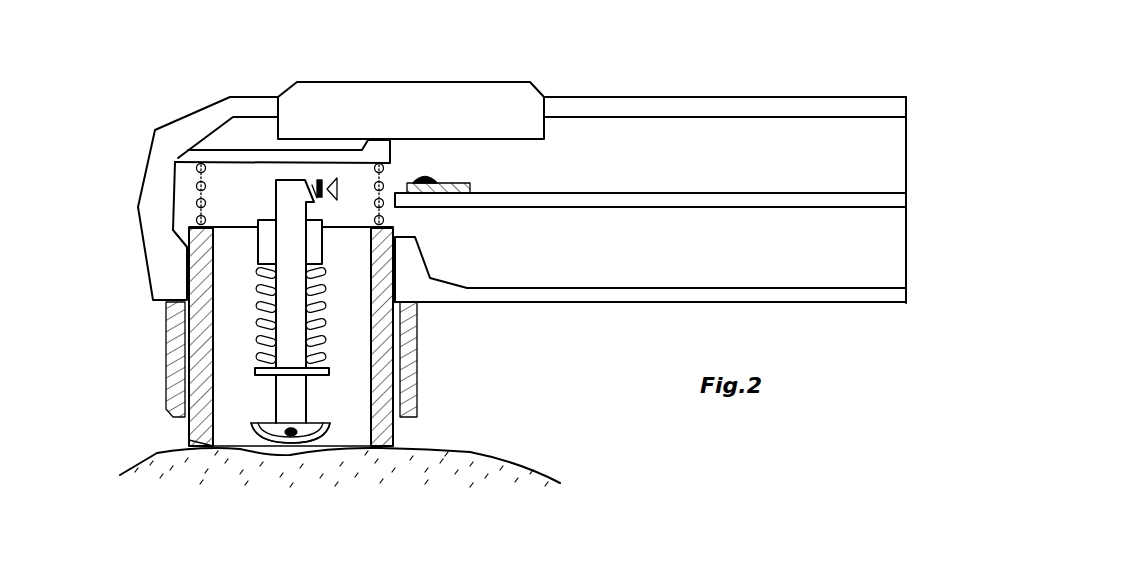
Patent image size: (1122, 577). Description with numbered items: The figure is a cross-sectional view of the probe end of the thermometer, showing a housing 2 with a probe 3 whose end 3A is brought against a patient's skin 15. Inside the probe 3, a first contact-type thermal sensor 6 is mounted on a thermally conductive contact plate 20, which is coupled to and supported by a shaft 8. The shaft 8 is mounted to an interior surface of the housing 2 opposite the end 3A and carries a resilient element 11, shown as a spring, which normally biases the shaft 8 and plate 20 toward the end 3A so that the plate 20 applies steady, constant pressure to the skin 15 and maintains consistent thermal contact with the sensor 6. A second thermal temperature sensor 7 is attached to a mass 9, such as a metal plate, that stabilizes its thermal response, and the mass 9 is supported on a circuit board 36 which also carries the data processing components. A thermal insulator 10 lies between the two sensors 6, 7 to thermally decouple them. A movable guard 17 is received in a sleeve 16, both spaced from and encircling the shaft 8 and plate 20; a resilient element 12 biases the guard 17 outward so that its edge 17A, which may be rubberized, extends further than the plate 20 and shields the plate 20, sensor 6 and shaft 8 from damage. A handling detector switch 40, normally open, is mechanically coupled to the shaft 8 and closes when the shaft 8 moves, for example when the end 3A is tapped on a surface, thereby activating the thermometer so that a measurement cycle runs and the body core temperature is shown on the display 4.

The housing 2 is at (583, 298).
The probe 3 is at (145, 372).
The end of the probe 3A is at (303, 447).
The display 4 is at (303, 90).
The first contact-type thermal sensor 6 is at (287, 438).
The second thermal temperature sensor 7 is at (427, 177).
The shaft 8 is at (297, 392).
The mass 9 is at (470, 187).
The thermal insulator 10 is at (242, 175).
The resilient element 11 is at (328, 328).
The resilient element 12 is at (197, 208).
The skin 15 is at (510, 477).
The sleeve 16 is at (172, 318).
The guard 17 is at (190, 434).
The edge of the guard 17A is at (207, 447).
The contact plate 20 is at (325, 435).
The circuit board 36 is at (592, 193).
The handling detector switch 40 is at (338, 178).